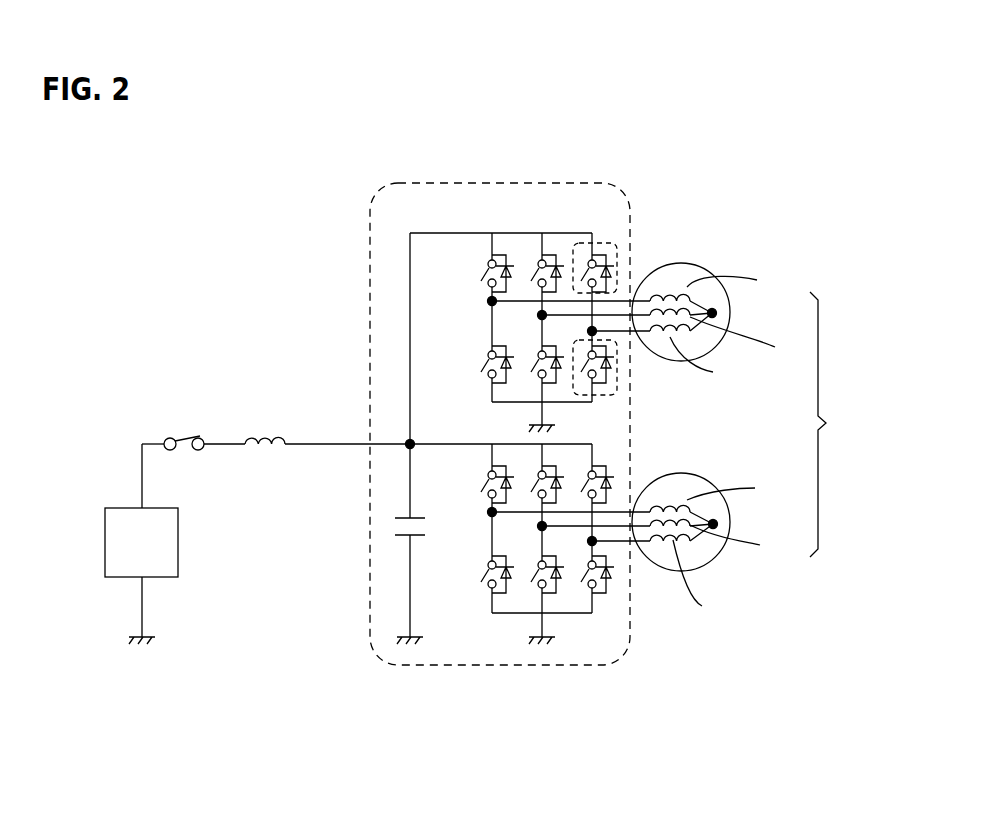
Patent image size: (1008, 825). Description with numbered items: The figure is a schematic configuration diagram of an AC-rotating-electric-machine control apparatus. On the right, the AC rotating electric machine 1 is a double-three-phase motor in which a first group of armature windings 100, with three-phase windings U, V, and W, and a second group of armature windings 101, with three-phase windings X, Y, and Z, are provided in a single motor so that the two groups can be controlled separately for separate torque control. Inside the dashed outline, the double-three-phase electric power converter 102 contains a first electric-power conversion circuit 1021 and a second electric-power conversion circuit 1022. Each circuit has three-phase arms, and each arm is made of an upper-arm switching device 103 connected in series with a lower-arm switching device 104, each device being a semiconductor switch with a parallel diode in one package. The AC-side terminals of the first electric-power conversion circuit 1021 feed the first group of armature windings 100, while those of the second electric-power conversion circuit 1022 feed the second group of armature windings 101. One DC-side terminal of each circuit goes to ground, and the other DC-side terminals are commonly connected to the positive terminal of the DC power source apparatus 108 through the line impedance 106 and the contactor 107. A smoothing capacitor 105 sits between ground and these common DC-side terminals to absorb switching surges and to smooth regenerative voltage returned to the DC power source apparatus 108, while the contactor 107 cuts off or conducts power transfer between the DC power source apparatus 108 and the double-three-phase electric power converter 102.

The AC rotating electric machine 1 is at (854, 433).
The first group of armature windings 100 is at (700, 268).
The second group of armature windings 101 is at (700, 478).
The double-three-phase electric power converter 102 is at (487, 184).
The first electric-power conversion circuit 1021 is at (552, 240).
The second electric-power conversion circuit 1022 is at (571, 603).
The upper-arm switching device 103 is at (608, 243).
The lower-arm switching device 104 is at (604, 396).
The smoothing capacitor 105 is at (400, 543).
The line impedance 106 is at (262, 432).
The contactor 107 is at (184, 432).
The DC power source apparatus 108 is at (122, 505).